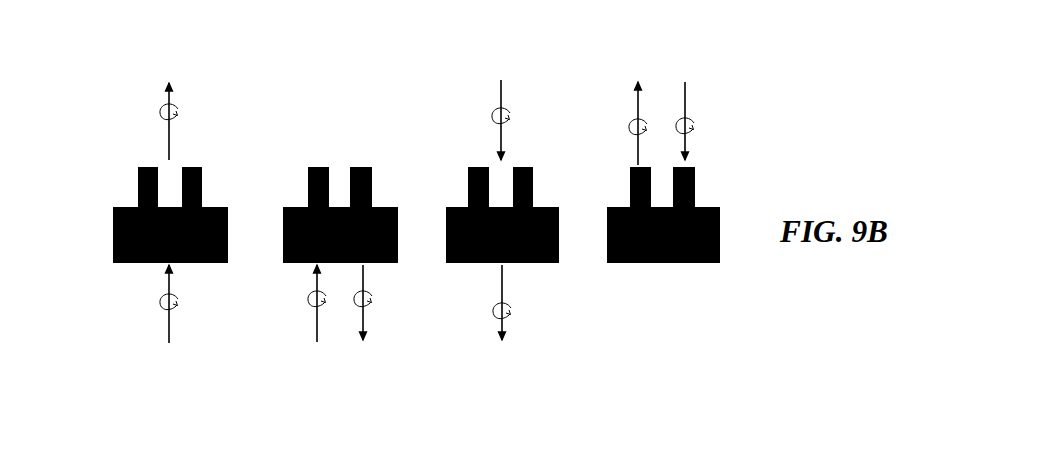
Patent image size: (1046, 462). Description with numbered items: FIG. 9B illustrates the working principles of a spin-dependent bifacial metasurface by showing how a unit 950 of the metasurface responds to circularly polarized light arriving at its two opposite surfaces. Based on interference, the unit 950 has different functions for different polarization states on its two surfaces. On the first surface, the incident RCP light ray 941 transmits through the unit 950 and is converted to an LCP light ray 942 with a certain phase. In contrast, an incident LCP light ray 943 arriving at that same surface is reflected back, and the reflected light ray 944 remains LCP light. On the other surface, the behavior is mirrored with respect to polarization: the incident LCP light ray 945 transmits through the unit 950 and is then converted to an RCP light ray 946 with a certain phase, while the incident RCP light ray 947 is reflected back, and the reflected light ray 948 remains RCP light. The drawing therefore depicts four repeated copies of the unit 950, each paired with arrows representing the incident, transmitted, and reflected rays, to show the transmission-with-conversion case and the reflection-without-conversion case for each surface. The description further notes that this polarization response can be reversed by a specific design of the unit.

The incident RCP light ray 941 is at (168, 335).
The LCP light ray 942 is at (167, 148).
The incident LCP light ray 943 is at (313, 325).
The reflected LCP light ray 944 is at (367, 323).
The incident LCP light ray 945 is at (498, 103).
The RCP light ray 946 is at (505, 322).
The incident RCP light ray 947 is at (690, 108).
The reflected RCP light ray 948 is at (636, 108).
The unit 950 is at (114, 242).